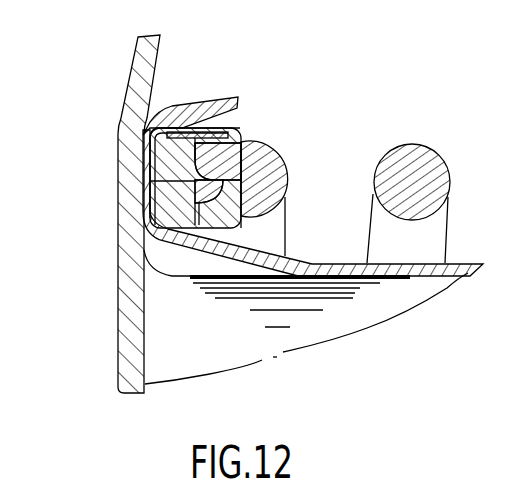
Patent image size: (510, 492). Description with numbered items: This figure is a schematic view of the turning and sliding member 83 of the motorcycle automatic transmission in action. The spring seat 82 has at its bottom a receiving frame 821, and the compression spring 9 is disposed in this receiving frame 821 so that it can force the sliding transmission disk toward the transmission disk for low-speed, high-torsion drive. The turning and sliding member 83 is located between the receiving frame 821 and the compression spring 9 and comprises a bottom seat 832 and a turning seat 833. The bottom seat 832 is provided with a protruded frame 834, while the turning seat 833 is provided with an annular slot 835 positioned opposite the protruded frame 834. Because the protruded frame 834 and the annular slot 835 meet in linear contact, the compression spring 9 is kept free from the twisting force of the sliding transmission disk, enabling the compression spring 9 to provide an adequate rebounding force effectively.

The compression spring 9 is at (276, 158).
The spring seat 82 is at (318, 262).
The turning and sliding member 83 is at (153, 140).
The receiving frame 821 is at (201, 100).
The bottom seat 832 is at (150, 150).
The turning seat 833 is at (152, 212).
The protruded frame 834 is at (158, 185).
The annular slot 835 is at (155, 160).